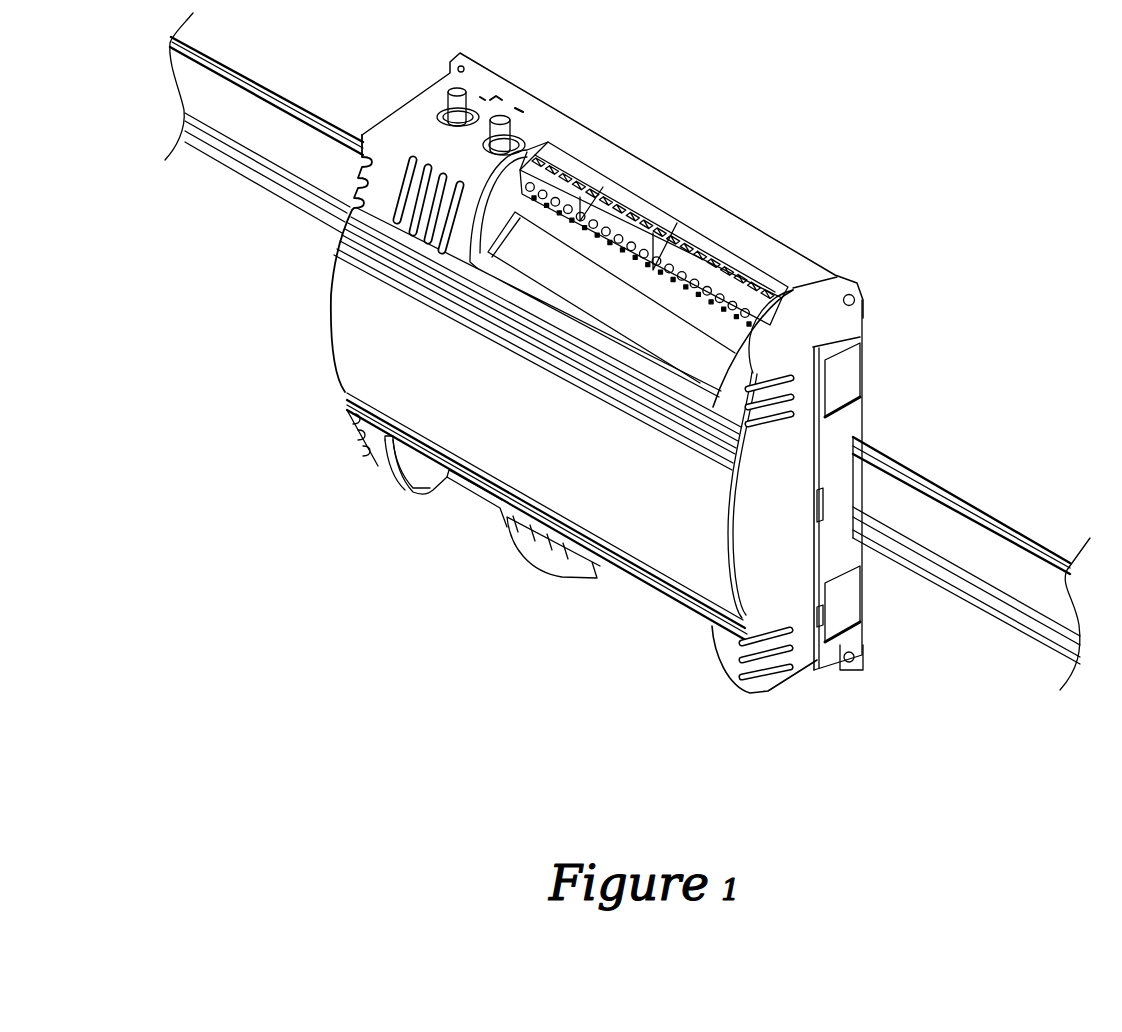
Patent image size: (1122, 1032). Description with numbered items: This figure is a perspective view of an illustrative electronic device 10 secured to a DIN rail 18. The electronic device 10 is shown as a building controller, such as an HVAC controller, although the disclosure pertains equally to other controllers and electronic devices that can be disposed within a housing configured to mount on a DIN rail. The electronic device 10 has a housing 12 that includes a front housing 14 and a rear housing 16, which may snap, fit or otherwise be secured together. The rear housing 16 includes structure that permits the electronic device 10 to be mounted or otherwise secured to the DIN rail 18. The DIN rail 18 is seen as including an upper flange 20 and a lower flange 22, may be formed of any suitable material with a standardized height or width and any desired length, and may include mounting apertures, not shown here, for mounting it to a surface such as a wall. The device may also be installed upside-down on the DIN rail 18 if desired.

The electronic device 10 is at (275, 324).
The housing 12 is at (676, 135).
The front housing 14 is at (762, 590).
The rear housing 16 is at (863, 416).
The DIN rail 18 is at (1005, 486).
The upper flange 20 is at (1023, 537).
The lower flange 22 is at (1023, 627).